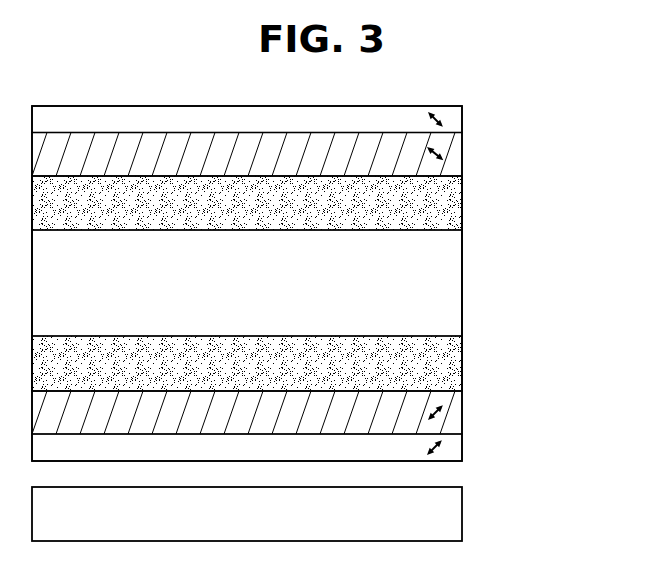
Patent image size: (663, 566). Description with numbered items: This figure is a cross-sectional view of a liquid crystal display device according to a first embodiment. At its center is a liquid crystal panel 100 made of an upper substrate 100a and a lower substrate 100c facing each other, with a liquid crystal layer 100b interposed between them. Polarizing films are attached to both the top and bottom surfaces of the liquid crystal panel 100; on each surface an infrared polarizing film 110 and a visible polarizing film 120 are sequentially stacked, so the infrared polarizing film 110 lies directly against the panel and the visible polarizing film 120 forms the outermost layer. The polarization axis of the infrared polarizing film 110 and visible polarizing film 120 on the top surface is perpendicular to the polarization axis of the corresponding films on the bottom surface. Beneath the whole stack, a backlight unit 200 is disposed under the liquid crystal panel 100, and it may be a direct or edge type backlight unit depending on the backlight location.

The liquid crystal panel 100 is at (323, 283).
The upper substrate 100a is at (453, 202).
The liquid crystal layer 100b is at (453, 282).
The lower substrate 100c is at (286, 363).
The infrared polarizing film 110 is at (453, 151).
The visible polarizing film 120 is at (453, 118).
The backlight unit 200 is at (453, 513).